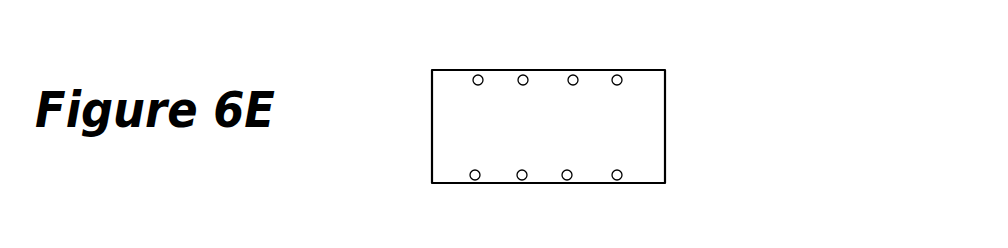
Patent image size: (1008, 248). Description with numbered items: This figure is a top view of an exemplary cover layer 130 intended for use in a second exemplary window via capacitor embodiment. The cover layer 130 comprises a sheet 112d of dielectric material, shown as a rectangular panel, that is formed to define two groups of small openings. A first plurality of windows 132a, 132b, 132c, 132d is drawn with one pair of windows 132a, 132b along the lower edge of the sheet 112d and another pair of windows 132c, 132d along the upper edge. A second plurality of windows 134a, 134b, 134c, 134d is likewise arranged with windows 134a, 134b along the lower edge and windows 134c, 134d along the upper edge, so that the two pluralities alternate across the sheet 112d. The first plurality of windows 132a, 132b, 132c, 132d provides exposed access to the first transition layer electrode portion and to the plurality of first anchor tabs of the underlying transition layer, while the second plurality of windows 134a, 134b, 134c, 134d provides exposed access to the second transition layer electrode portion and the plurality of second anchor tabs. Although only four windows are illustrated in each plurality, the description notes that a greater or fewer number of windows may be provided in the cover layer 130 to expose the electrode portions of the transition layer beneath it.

The cover layer 130 is at (750, 144).
The sheet of dielectric material 112d is at (645, 122).
The window 132a is at (475, 181).
The window 132b is at (567, 181).
The window 132c is at (518, 74).
The window 132d is at (620, 75).
The window 134a is at (522, 181).
The window 134b is at (617, 181).
The window 134c is at (473, 74).
The window 134d is at (577, 74).